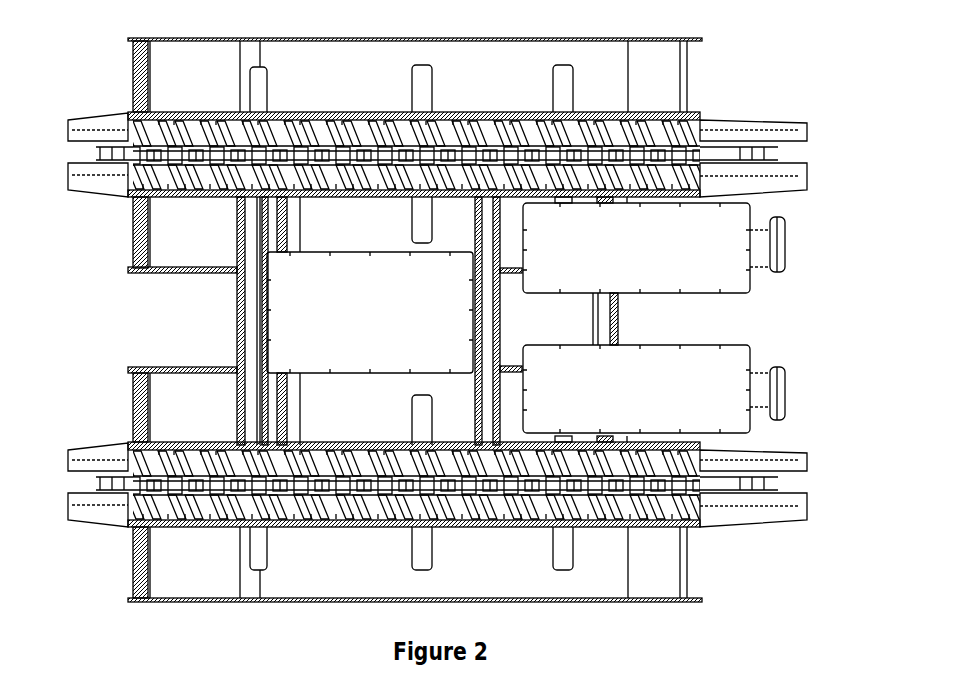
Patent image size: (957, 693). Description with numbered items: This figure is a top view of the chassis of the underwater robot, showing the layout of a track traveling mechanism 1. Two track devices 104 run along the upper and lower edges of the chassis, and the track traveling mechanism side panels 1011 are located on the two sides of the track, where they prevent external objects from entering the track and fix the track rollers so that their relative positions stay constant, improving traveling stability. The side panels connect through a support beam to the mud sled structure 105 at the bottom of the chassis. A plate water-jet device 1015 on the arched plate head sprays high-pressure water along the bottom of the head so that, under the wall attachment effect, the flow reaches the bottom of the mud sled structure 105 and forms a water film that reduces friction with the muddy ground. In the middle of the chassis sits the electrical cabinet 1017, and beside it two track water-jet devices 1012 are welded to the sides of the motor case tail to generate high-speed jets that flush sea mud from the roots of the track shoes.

The track device 104 is at (250, 112).
The mud sled structure 105 is at (522, 573).
The plate water-jet device 1015 is at (133, 243).
The track traveling mechanism side panel 1011 is at (175, 408).
The electrical cabinet 1017 is at (297, 318).
The track traveling mechanism 1 is at (490, 322).
The track water-jet device 1012 is at (787, 272).